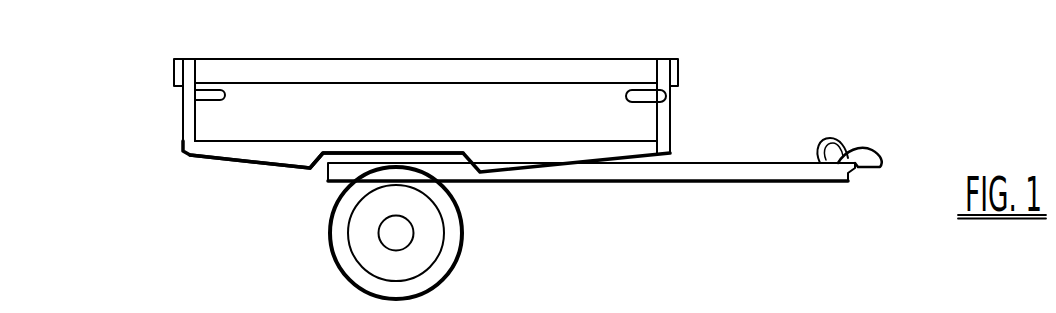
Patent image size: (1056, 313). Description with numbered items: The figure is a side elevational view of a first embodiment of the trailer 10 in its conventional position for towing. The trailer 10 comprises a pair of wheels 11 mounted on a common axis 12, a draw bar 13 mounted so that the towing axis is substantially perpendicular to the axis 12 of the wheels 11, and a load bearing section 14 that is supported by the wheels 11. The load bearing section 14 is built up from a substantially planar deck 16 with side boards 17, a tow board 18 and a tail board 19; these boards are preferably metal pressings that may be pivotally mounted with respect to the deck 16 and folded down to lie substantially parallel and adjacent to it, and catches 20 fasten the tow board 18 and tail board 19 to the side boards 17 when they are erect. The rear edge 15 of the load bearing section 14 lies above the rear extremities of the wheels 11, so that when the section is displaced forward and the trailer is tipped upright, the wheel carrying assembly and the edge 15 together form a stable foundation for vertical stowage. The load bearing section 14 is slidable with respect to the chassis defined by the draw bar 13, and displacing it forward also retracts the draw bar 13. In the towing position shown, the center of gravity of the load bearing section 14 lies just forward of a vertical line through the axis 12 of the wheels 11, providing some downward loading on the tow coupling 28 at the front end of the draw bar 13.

The trailer 10 is at (686, 80).
The wheels 11 is at (463, 248).
The common axis 12 is at (379, 233).
The draw bar 13 is at (790, 191).
The load bearing section 14 is at (407, 58).
The rear edge 15 is at (182, 154).
The deck 16 is at (320, 150).
The side boards 17 is at (426, 112).
The tow board 18 is at (672, 125).
The tail board 19 is at (185, 115).
The catches 20 is at (214, 92).
The tow coupling 28 is at (882, 150).